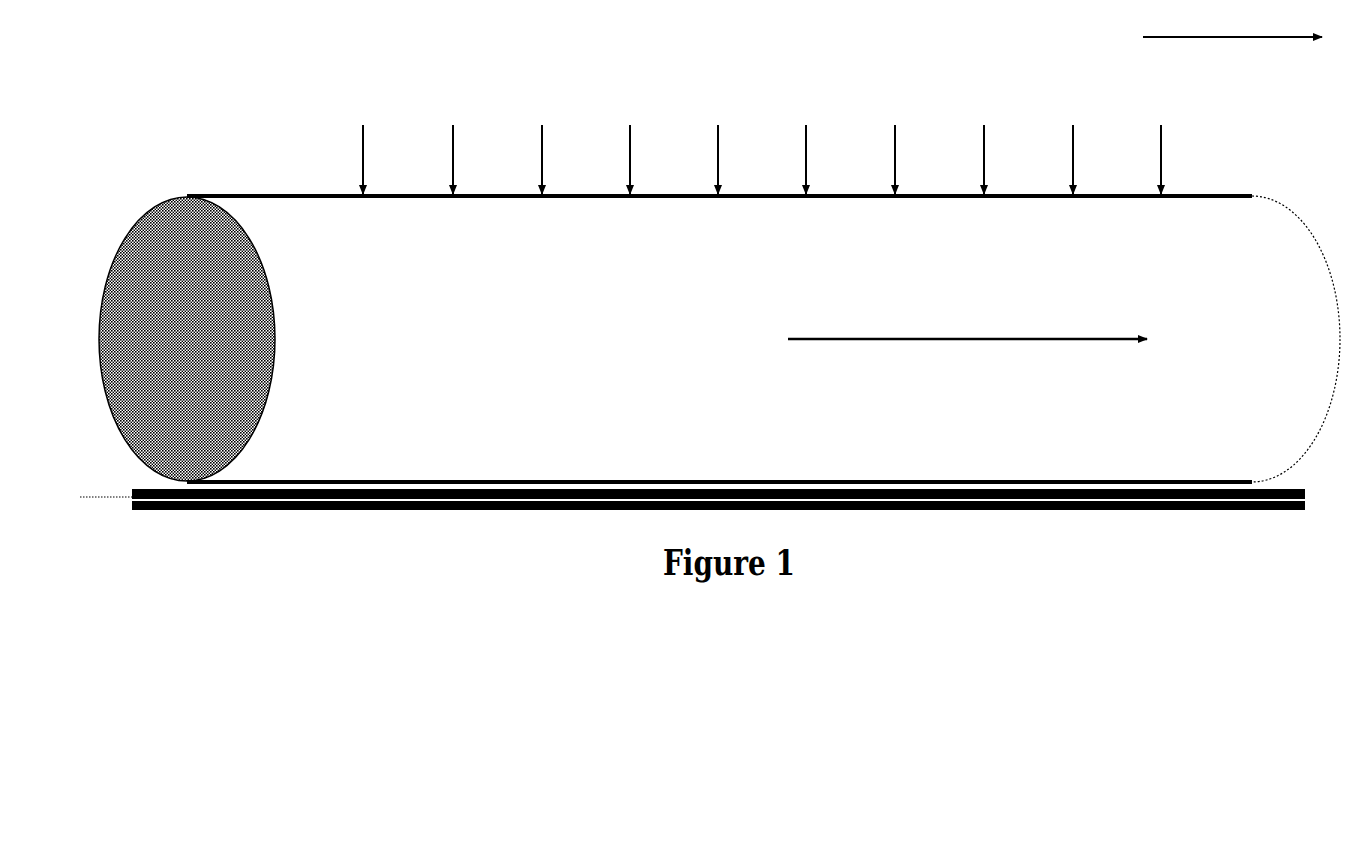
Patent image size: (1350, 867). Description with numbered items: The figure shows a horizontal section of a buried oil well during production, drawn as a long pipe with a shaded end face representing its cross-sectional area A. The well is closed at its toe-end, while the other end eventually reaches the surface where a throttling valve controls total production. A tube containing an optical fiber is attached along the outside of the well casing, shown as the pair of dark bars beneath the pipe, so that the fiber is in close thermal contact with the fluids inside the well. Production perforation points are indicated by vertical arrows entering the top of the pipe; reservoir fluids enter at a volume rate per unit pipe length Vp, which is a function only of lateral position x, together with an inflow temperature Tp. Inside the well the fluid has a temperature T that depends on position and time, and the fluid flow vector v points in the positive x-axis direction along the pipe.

The cross-sectional area A is at (187, 339).
The temperature of well fluids T is at (763, 339).
The volume rate per unit pipe length Vp is at (762, 122).
The fluid flow vector v is at (967, 306).
The lateral position x is at (1241, 67).